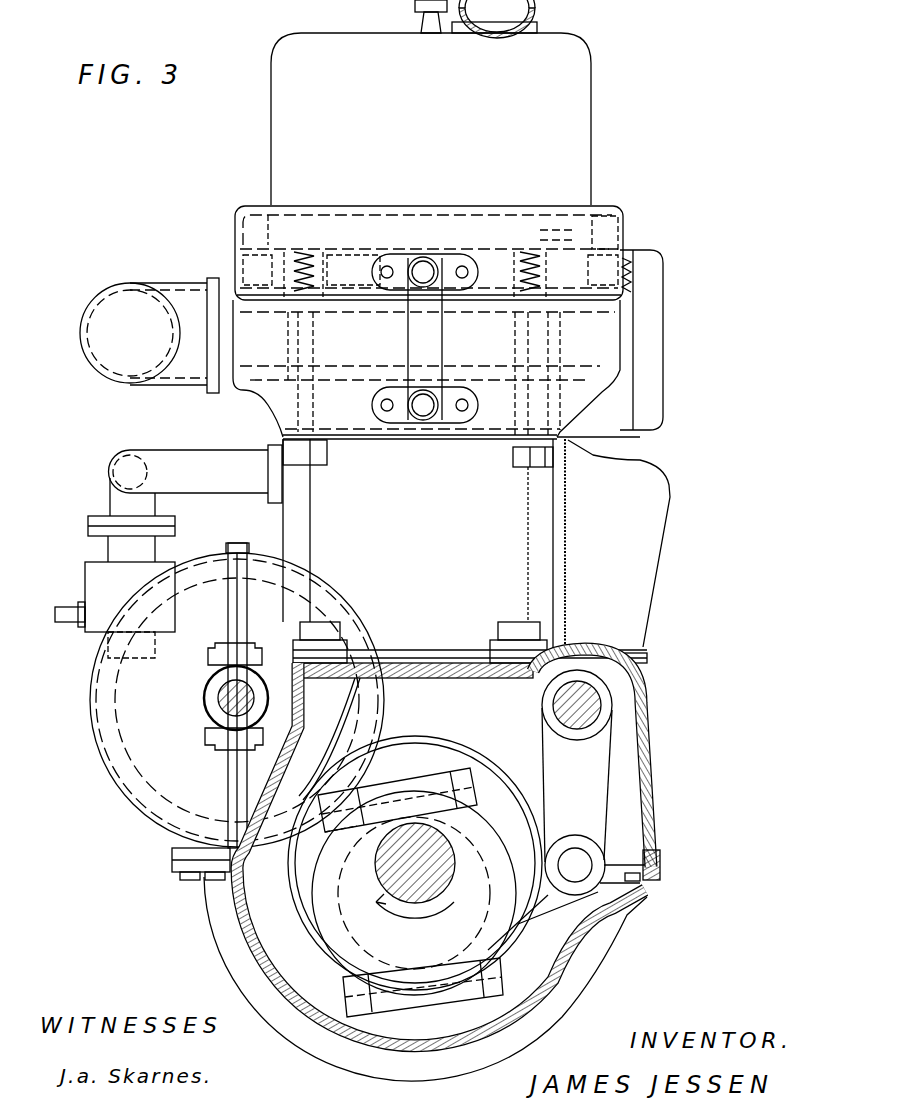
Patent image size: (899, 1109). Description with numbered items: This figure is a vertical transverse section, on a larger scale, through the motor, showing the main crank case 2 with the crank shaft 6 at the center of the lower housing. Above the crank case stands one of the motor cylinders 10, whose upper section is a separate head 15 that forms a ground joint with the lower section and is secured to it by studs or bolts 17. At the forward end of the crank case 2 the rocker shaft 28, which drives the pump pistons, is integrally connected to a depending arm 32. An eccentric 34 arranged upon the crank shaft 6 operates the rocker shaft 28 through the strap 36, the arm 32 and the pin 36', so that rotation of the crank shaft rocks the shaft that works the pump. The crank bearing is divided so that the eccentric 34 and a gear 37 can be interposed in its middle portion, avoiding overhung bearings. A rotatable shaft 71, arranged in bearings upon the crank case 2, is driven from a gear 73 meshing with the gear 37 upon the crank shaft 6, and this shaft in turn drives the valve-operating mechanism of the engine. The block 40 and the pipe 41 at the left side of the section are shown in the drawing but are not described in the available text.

The main crank case 2 is at (646, 792).
The crank shaft 6 is at (392, 865).
The motor cylinder 10 is at (476, 550).
The head 15 is at (431, 102).
The stud or bolt 17 is at (525, 455).
The rocker shaft 28 is at (600, 703).
The depending arm 32 is at (575, 757).
The eccentric 34 is at (414, 893).
The strap 36 is at (566, 908).
The pin 36' is at (575, 846).
The gear 37 is at (405, 752).
The valve block 40 is at (102, 585).
The pipe 41 is at (168, 458).
The rotatable shaft 71 is at (217, 692).
The gear 73 is at (340, 690).